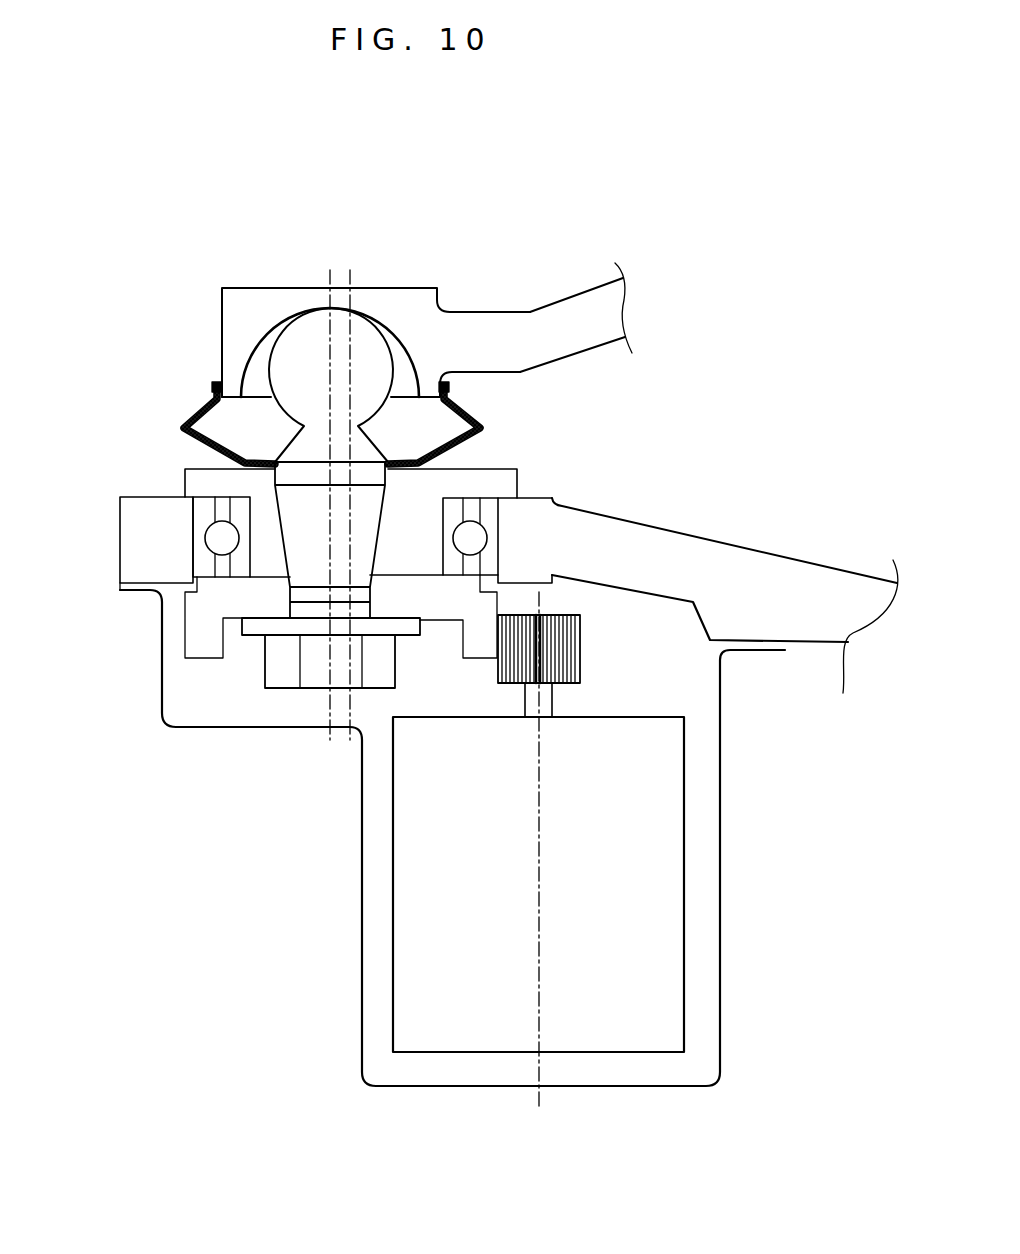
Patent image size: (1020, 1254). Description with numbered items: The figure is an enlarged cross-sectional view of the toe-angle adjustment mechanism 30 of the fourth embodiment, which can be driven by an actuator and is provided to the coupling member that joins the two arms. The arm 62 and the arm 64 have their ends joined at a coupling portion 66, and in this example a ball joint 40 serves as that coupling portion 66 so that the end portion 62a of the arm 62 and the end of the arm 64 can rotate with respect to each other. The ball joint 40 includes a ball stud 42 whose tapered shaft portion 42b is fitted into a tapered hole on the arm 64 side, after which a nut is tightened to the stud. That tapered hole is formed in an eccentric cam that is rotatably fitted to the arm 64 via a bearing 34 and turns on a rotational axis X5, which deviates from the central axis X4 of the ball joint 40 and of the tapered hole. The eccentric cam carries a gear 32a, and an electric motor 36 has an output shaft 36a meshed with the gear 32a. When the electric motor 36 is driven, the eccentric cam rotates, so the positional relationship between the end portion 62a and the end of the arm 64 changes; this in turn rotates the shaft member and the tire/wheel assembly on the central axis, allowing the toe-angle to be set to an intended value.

The toe-angle adjustment mechanism 30 is at (185, 308).
The gear 32a is at (482, 609).
The bearing 34 is at (472, 537).
The electric motor 36 is at (668, 803).
The output shaft 36a is at (562, 648).
The ball joint 40 is at (293, 370).
The ball stud 42 is at (220, 524).
The tapered shaft portion 42b is at (278, 522).
The arm 62 is at (498, 323).
The end portion 62a is at (242, 302).
The arm 64 is at (732, 557).
The coupling portion 66 is at (485, 413).
The central axis X4 is at (330, 565).
The rotational axis X5 is at (352, 515).